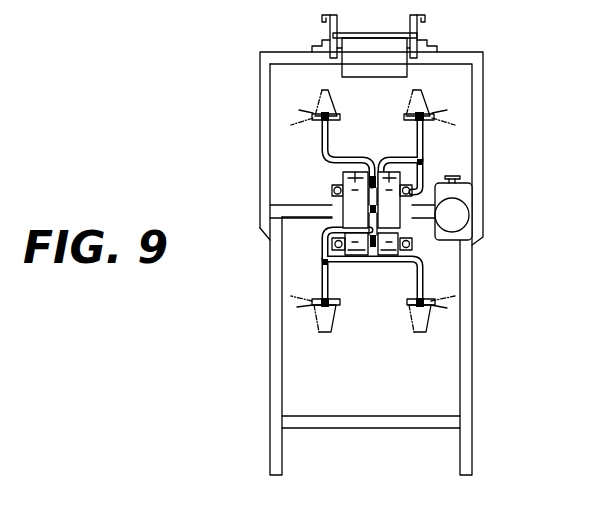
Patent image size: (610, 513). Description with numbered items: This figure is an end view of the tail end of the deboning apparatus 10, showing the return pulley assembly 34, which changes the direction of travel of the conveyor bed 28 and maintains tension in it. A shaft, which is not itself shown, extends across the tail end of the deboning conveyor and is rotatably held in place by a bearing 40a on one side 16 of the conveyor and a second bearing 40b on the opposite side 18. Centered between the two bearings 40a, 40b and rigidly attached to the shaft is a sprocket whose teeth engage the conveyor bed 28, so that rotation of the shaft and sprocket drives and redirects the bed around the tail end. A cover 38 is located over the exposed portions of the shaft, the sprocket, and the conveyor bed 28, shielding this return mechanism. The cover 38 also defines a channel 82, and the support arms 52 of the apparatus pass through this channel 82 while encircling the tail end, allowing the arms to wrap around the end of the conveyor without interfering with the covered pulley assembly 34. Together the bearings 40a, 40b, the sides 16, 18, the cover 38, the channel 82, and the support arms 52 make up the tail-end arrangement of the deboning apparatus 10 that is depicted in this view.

The deboning apparatus 10 is at (388, 460).
The side 16 is at (324, 184).
The side 18 is at (420, 249).
The conveyor bed 28 is at (378, 220).
The return pulley assembly 34 is at (302, 233).
The cover 38 is at (358, 177).
The bearing 40a is at (332, 198).
The bearing 40b is at (403, 223).
The support arms 52 is at (322, 142).
The channel 82 is at (375, 177).